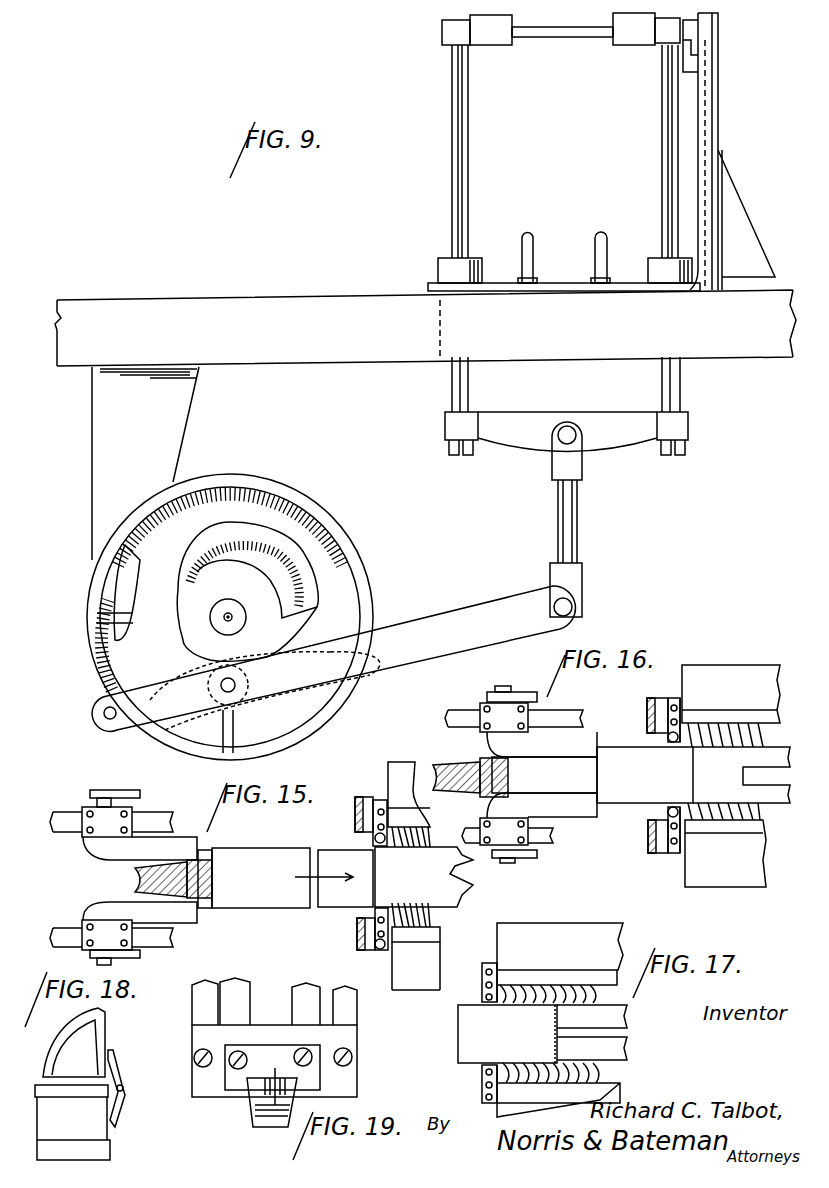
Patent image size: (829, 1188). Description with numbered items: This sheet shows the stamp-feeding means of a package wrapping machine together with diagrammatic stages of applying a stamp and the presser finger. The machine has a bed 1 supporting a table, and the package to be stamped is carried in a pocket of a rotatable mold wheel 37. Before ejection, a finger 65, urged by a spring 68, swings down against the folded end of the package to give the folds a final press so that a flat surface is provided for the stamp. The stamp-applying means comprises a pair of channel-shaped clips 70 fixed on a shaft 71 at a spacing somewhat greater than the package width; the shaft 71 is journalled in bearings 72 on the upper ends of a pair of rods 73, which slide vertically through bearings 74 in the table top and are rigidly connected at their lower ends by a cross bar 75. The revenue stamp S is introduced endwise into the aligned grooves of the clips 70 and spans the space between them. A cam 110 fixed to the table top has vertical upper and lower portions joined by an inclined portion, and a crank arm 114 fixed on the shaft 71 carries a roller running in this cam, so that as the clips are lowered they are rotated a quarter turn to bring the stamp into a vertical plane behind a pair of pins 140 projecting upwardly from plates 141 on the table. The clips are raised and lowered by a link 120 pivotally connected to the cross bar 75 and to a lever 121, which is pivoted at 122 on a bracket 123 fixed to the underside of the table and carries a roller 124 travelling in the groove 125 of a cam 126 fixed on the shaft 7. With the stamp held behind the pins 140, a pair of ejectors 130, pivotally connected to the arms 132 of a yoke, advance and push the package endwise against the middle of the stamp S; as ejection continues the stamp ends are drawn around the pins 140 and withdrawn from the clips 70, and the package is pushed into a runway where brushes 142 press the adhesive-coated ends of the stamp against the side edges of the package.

In FIG. 9, the bed 1 is at (327, 298).
In FIG. 9, the shaft 7 is at (227, 606).
In FIG. 15, the mold wheel 37 is at (140, 876).
In FIG. 16, the mold wheel 37 is at (470, 777).
In FIG. 18, the finger 65 is at (122, 1108).
In FIG. 19, the finger 65 is at (253, 1108).
In FIG. 19, the spring 68 is at (265, 1072).
In FIG. 9, the clips 70 is at (498, 37).
In FIG. 15, the clips 70 is at (358, 797).
In FIG. 16, the clips 70 is at (650, 700).
In FIG. 9, the shaft 71 is at (577, 33).
In FIG. 9, the bearings 72 is at (452, 40).
In FIG. 9, the rods 73 is at (462, 187).
In FIG. 9, the bearings 74 is at (445, 263).
In FIG. 9, the cross bar 75 is at (541, 416).
In FIG. 9, the cam 110 is at (720, 117).
In FIG. 9, the crank arm 114 is at (690, 25).
In FIG. 9, the link 120 is at (558, 518).
In FIG. 9, the lever 121 is at (423, 627).
In FIG. 9, the pivot 122 is at (104, 712).
In FIG. 9, the bracket 123 is at (107, 485).
In FIG. 9, the roller 124 is at (223, 630).
In FIG. 9, the groove 125 is at (333, 595).
In FIG. 9, the cam 126 is at (325, 512).
In FIG. 15, the ejectors 130 is at (150, 845).
In FIG. 16, the ejectors 130 is at (583, 742).
In FIG. 15, the arms 132 is at (135, 790).
In FIG. 16, the arms 132 is at (535, 853).
In FIG. 9, the pins 140 is at (597, 233).
In FIG. 15, the pins 140 is at (372, 838).
In FIG. 16, the pins 140 is at (672, 742).
In FIG. 17, the pins 140 is at (497, 983).
In FIG. 9, the plates 141 is at (627, 285).
In FIG. 16, the plates 141 is at (681, 703).
In FIG. 17, the plates 141 is at (482, 966).
In FIG. 15, the brushes 142 is at (414, 876).
In FIG. 16, the brushes 142 is at (730, 727).
In FIG. 17, the brushes 142 is at (560, 983).
In FIG. 15, the revenue stamp S is at (365, 877).
In FIG. 16, the revenue stamp S is at (693, 775).
In FIG. 17, the revenue stamp S is at (560, 1018).